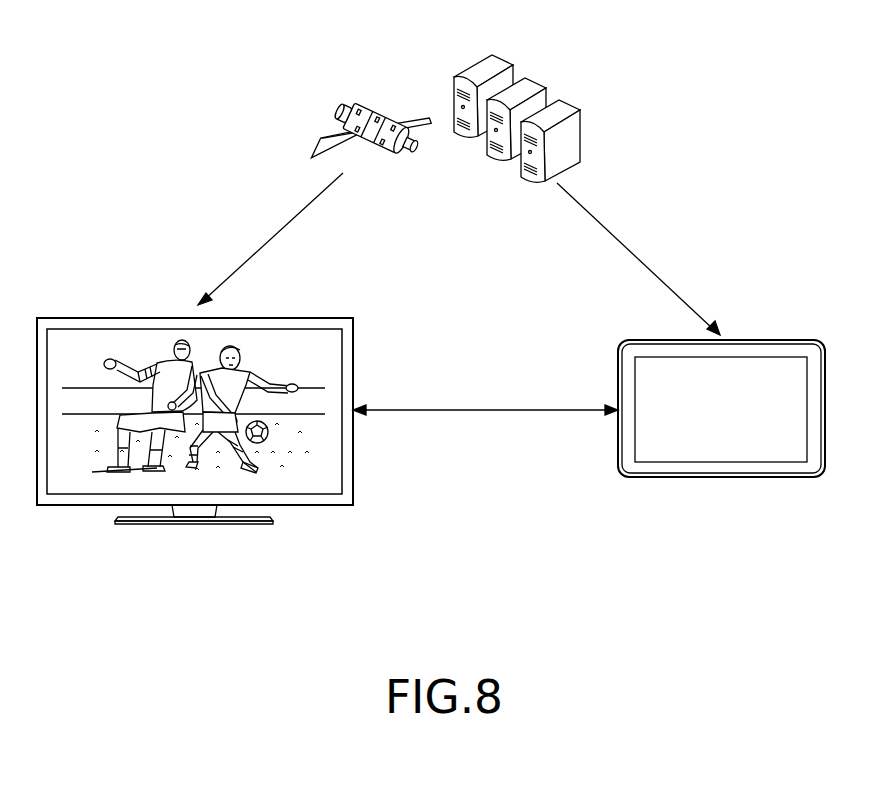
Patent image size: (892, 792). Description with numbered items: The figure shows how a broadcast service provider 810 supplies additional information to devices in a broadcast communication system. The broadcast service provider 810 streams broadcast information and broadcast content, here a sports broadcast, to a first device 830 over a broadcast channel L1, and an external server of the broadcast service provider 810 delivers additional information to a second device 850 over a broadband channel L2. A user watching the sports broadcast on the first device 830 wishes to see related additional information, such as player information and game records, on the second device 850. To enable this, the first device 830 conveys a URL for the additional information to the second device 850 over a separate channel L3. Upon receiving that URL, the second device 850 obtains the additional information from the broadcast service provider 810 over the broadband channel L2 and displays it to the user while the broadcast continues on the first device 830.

The broadcast service provider 810 is at (423, 78).
The first device 830 is at (80, 318).
The second device 850 is at (783, 340).
The broadcast channel L1 is at (238, 268).
The broadband channel L2 is at (680, 297).
The separate channel L3 is at (487, 412).